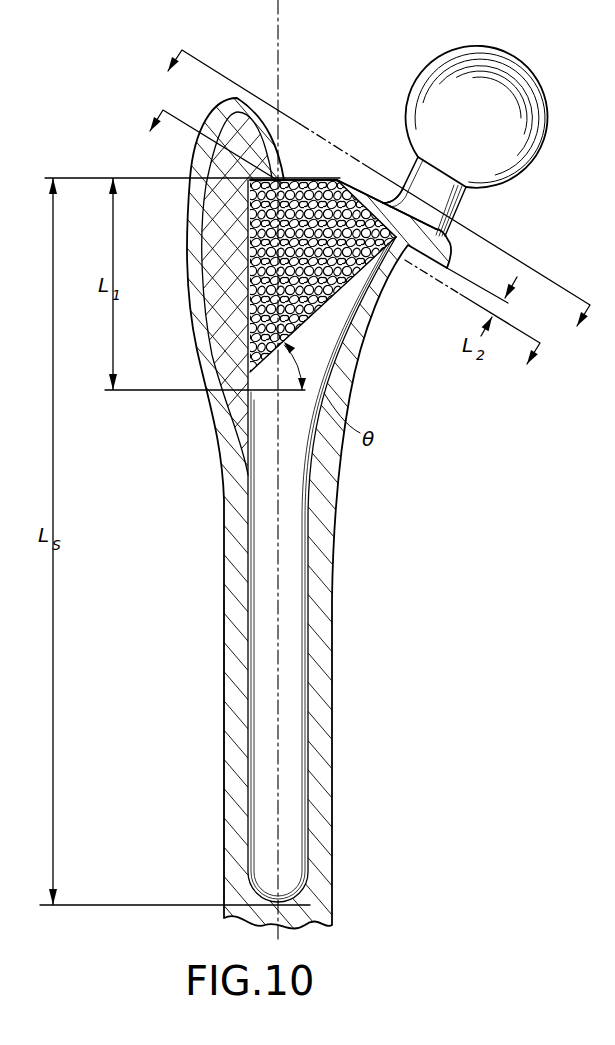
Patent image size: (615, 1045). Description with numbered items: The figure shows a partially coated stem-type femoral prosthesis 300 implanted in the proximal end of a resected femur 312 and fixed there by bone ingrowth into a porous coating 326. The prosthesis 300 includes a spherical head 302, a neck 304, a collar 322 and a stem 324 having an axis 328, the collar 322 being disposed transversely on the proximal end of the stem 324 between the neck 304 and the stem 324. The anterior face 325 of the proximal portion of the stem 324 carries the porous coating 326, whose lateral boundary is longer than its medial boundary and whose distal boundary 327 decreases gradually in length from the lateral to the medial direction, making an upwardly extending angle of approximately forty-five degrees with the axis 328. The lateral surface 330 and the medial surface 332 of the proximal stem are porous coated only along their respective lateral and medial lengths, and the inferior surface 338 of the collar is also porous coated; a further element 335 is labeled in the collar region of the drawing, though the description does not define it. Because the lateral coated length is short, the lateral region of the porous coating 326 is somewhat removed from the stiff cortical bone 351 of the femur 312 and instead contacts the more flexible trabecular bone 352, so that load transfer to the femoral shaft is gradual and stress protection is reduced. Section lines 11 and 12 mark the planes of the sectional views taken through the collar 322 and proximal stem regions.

The partially coated stem-type femoral prosthesis 300 is at (326, 558).
The spherical head 302 is at (547, 92).
The neck 304 is at (455, 202).
The resected femur 312 is at (216, 560).
The collar 322 is at (447, 242).
The stem 324 is at (312, 642).
The anterior face 325 is at (332, 378).
The porous coating configuration 326 is at (303, 180).
The distal boundary 327 is at (333, 353).
The axis 328 is at (284, 66).
The lateral surface 330 is at (247, 243).
The medial surface 332 is at (430, 277).
The collar 335 is at (393, 272).
The inferior surface 338 is at (354, 194).
The cortical bone 351 is at (335, 468).
The trabecular bone 352 is at (218, 304).
The section line 11- 11 is at (370, 203).
The section line 12- 12 is at (335, 255).